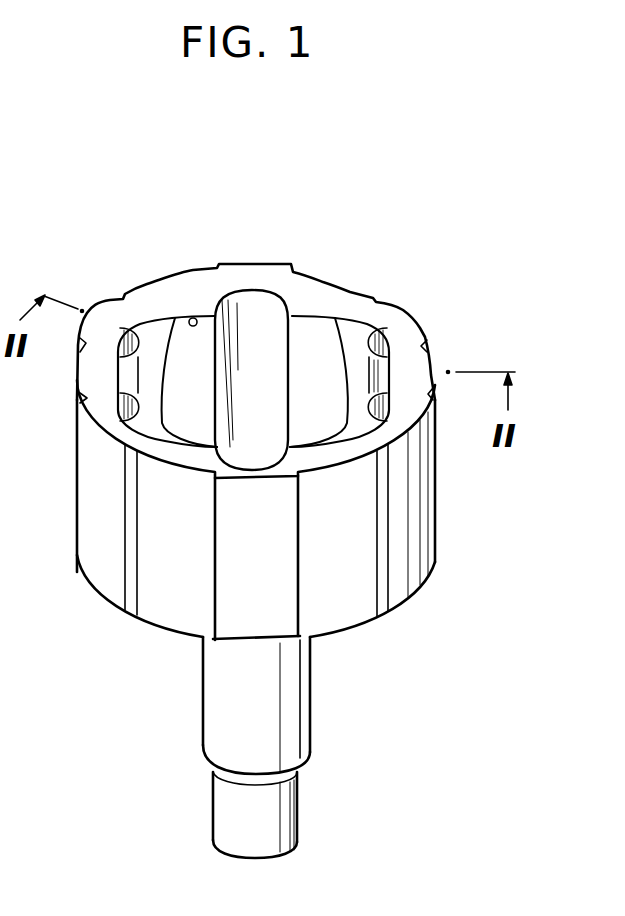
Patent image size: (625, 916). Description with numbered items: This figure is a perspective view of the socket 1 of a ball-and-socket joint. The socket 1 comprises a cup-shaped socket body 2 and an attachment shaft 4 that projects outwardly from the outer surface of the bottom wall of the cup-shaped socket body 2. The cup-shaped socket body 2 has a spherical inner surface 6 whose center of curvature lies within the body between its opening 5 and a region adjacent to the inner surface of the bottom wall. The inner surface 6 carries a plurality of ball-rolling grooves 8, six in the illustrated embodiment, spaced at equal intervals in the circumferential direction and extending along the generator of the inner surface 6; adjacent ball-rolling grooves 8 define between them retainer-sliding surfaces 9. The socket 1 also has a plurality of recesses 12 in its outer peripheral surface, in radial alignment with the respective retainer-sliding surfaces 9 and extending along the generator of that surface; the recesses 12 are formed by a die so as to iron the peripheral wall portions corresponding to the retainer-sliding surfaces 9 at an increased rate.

The socket 1 is at (146, 282).
The cup-shaped socket body 2 is at (331, 297).
The attachment shaft 4 is at (215, 714).
The opening 5 is at (191, 318).
The spherical inner surface 6 is at (305, 335).
The ball-rolling grooves 8 is at (148, 351).
The retainer-sliding surfaces 9 is at (200, 413).
The recesses 12 is at (351, 607).